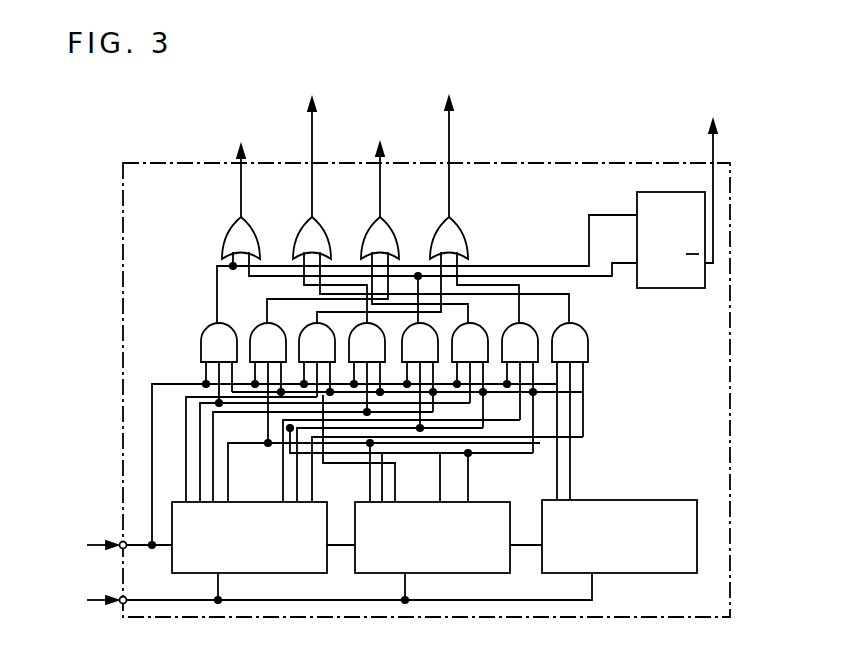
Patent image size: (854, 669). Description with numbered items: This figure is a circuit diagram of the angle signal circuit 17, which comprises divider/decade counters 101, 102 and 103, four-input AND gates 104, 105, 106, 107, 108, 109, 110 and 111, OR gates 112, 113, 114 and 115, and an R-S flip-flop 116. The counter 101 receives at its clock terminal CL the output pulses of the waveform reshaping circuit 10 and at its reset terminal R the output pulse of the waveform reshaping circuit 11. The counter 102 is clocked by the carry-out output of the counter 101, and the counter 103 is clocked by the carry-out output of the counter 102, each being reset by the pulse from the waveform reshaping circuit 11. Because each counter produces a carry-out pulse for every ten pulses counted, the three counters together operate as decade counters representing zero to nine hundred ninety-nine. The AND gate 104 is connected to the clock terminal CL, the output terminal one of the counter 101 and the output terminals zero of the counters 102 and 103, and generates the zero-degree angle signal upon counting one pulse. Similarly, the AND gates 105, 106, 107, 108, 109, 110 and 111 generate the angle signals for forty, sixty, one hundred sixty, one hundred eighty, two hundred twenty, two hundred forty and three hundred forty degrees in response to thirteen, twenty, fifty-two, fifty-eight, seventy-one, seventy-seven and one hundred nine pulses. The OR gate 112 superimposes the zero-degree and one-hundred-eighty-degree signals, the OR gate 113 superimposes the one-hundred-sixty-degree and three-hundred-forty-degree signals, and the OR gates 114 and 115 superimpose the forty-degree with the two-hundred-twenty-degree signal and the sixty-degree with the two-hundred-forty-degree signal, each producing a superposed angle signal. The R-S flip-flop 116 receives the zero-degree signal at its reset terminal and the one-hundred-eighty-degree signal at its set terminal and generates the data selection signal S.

The waveform reshaping circuit 10 is at (117, 545).
The waveform reshaping circuit 11 is at (328, 593).
The angle signal circuit 17 is at (597, 162).
The divider/decade counter 101 is at (262, 575).
The divider/decade counter 102 is at (445, 575).
The divider/decade counter 103 is at (655, 573).
The 4-input AND gate 104 is at (209, 334).
The 4-input AND gate 105 is at (258, 332).
The 4-input AND gate 106 is at (306, 332).
The 4-input AND gate 107 is at (360, 334).
The 4-input AND gate 108 is at (410, 334).
The 4-input AND gate 109 is at (461, 334).
The 4-input AND gate 110 is at (510, 332).
The 4-input AND gate 111 is at (558, 332).
The OR gate 112 is at (232, 226).
The OR gate 113 is at (305, 226).
The OR gate 114 is at (372, 226).
The OR gate 115 is at (441, 226).
The R-S flip-flop 116 is at (678, 288).